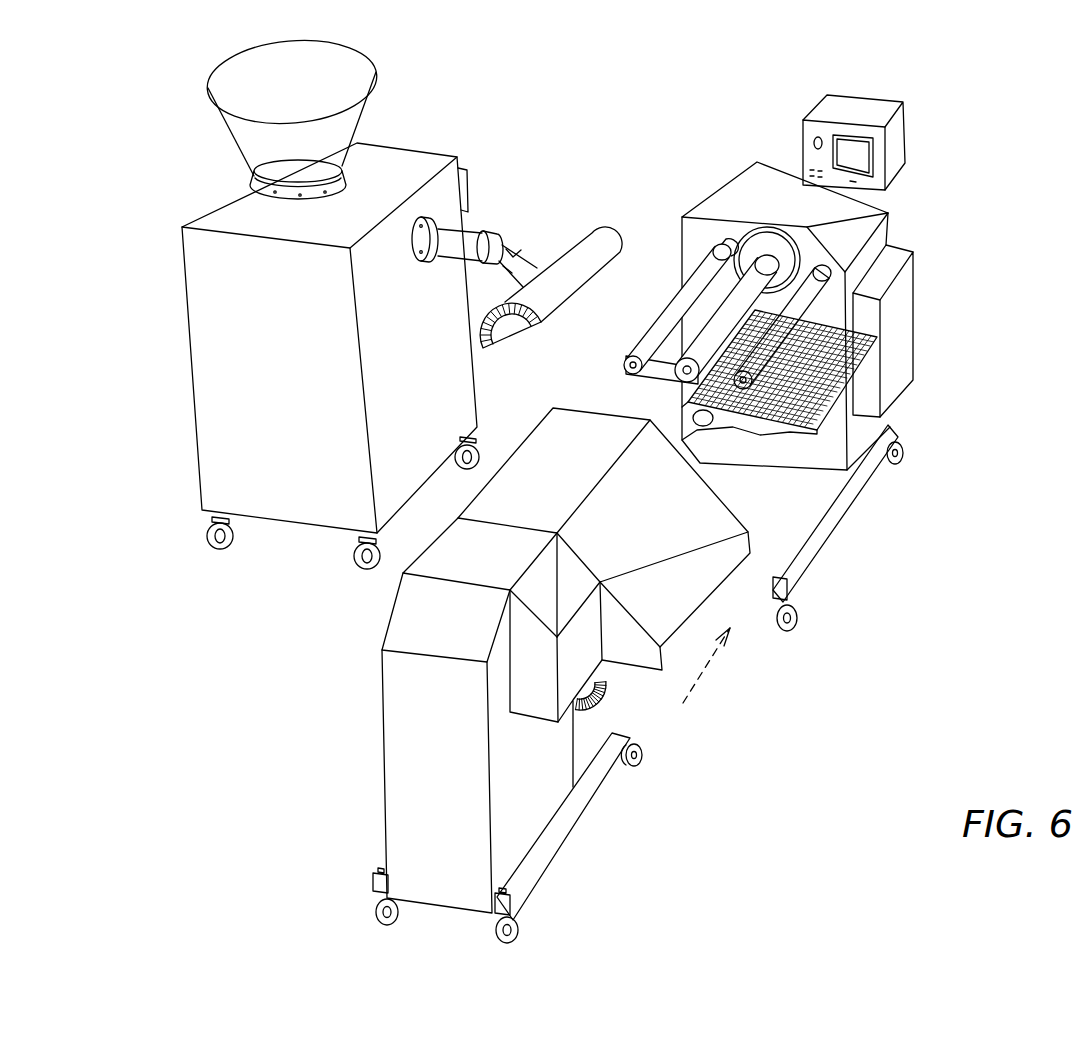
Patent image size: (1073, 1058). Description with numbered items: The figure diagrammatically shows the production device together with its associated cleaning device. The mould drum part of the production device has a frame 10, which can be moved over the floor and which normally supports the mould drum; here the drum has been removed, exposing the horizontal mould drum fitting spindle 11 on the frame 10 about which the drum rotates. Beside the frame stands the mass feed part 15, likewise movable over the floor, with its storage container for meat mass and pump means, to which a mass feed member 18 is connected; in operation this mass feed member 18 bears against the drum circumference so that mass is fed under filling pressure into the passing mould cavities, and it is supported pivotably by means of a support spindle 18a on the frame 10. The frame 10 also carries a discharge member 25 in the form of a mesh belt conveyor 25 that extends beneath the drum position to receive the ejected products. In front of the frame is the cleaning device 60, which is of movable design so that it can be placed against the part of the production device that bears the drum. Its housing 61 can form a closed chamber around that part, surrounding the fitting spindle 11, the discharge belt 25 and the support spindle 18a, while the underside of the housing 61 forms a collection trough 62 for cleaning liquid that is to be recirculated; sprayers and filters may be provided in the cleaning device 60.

The frame 10 is at (940, 298).
The mould drum fitting spindle 11 is at (725, 328).
The mass feed part 15 is at (449, 140).
The mass feed member 18 is at (572, 264).
The support spindle 18a is at (672, 325).
The discharge member (mesh belt conveyor) 25 is at (760, 430).
The cleaning device 60 is at (767, 742).
The housing 61 is at (687, 581).
The collection trough 62 is at (613, 672).